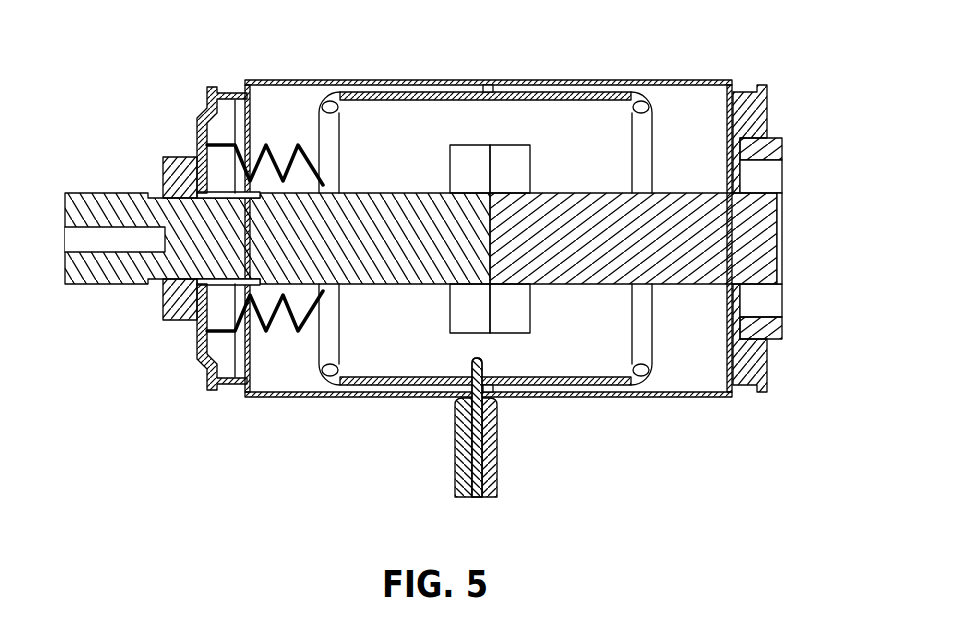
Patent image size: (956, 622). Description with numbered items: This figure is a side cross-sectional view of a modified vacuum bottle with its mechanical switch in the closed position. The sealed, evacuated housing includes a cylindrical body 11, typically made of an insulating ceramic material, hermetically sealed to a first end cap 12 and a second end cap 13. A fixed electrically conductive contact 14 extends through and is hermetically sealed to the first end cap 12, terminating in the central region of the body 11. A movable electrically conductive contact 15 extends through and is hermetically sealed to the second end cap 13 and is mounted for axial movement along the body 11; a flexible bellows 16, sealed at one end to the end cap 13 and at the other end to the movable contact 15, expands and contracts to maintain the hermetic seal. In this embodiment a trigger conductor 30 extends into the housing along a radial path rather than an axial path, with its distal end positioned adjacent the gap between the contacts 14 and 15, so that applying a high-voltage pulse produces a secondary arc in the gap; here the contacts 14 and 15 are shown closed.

The body 11 is at (652, 80).
The first end cap 12 is at (750, 92).
The second end cap 13 is at (229, 92).
The fixed electrically conductive contact 14 is at (463, 145).
The movable electrically conductive contact 15 is at (522, 145).
The flexible bellows 16 is at (278, 150).
The trigger conductor 30 is at (475, 448).